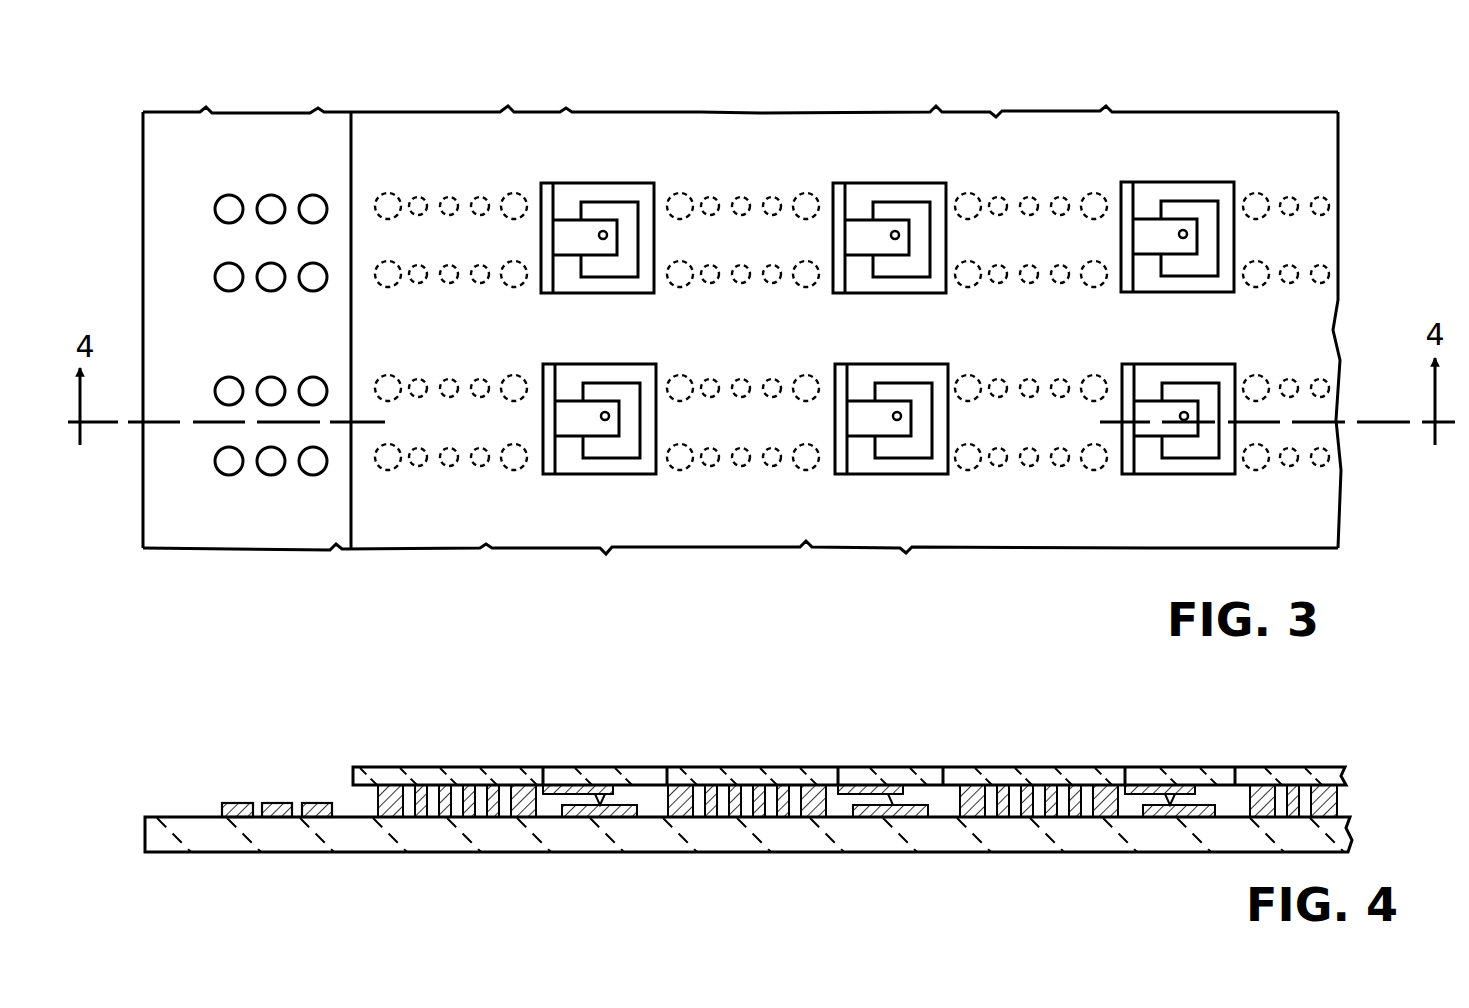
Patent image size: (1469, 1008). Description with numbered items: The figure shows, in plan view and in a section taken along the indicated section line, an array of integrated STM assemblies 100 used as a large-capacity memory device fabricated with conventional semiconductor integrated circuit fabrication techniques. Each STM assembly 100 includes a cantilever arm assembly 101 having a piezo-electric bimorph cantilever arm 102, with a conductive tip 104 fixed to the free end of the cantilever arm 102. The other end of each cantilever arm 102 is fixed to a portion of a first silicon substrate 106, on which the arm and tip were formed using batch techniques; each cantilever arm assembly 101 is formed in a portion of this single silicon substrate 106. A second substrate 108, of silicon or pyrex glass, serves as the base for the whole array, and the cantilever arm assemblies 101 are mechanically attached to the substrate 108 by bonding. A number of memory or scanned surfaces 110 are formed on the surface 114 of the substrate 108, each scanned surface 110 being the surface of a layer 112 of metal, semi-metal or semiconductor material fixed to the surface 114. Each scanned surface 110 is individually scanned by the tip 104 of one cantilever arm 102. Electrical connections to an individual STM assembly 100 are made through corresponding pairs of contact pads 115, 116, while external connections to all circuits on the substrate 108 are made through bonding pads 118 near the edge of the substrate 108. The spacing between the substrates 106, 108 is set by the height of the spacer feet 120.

In FIG. 3, the STM assembly 100 is at (560, 86).
In FIG. 4, the STM assembly 100 is at (421, 745).
In FIG. 3, the cantilever arm assembly 101 is at (823, 230).
In FIG. 4, the cantilever arm assembly 101 is at (1118, 768).
In FIG. 3, the piezo-electric bimorph cantilever arm 102 is at (858, 230).
In FIG. 4, the piezo-electric bimorph cantilever arm 102 is at (888, 792).
In FIG. 3, the conductive tip 104 is at (928, 212).
In FIG. 4, the conductive tip 104 is at (905, 793).
In FIG. 3, the first silicon substrate 106 is at (700, 128).
In FIG. 4, the first silicon substrate 106 is at (380, 763).
In FIG. 3, the second substrate 108 is at (275, 133).
In FIG. 4, the second substrate 108 is at (215, 855).
In FIG. 3, the memory surface 110 is at (900, 265).
In FIG. 4, the layer of material 112 is at (1160, 818).
In FIG. 3, the surface of the second substrate 114 is at (1062, 374).
In FIG. 4, the surface of the second substrate 114 is at (1345, 815).
In FIG. 4, the contact pad 115 is at (437, 790).
In FIG. 4, the contact pad 116 is at (445, 820).
In FIG. 3, the bonding pads 118 is at (238, 378).
In FIG. 4, the bonding pads 118 is at (312, 803).
In FIG. 3, the spacer feet 120 is at (686, 374).
In FIG. 4, the spacer feet 120 is at (672, 820).